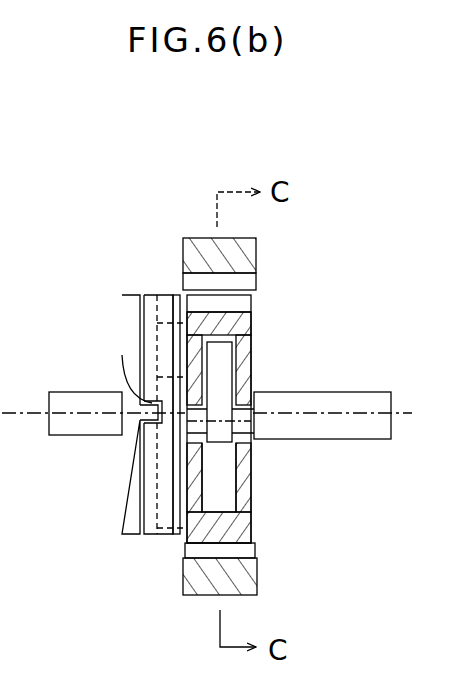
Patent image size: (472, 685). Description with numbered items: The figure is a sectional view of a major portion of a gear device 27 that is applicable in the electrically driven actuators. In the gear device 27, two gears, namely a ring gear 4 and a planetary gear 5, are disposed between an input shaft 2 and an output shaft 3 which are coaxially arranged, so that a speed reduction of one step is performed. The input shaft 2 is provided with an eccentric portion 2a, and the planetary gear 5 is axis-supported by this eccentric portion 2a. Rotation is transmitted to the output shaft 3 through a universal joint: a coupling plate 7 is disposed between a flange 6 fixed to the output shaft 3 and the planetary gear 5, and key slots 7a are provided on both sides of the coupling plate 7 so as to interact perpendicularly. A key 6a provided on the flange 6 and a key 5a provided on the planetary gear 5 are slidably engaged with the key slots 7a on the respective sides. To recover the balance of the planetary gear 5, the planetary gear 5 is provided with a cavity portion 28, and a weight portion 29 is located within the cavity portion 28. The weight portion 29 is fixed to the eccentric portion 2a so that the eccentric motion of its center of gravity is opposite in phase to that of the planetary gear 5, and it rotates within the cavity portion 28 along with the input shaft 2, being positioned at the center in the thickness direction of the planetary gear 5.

The input shaft 2 is at (363, 402).
The eccentric portion 2a is at (247, 432).
The output shaft 3 is at (65, 396).
The ring gear 4 is at (245, 262).
The planetary gear 5 is at (177, 533).
The key 5a is at (181, 320).
The flange 6 is at (132, 308).
The key 6a is at (141, 403).
The coupling plate 7 is at (152, 533).
The key slots 7a is at (147, 442).
The gear device 27 is at (322, 210).
The cavity portion 28 is at (222, 498).
The weight portion 29 is at (218, 365).